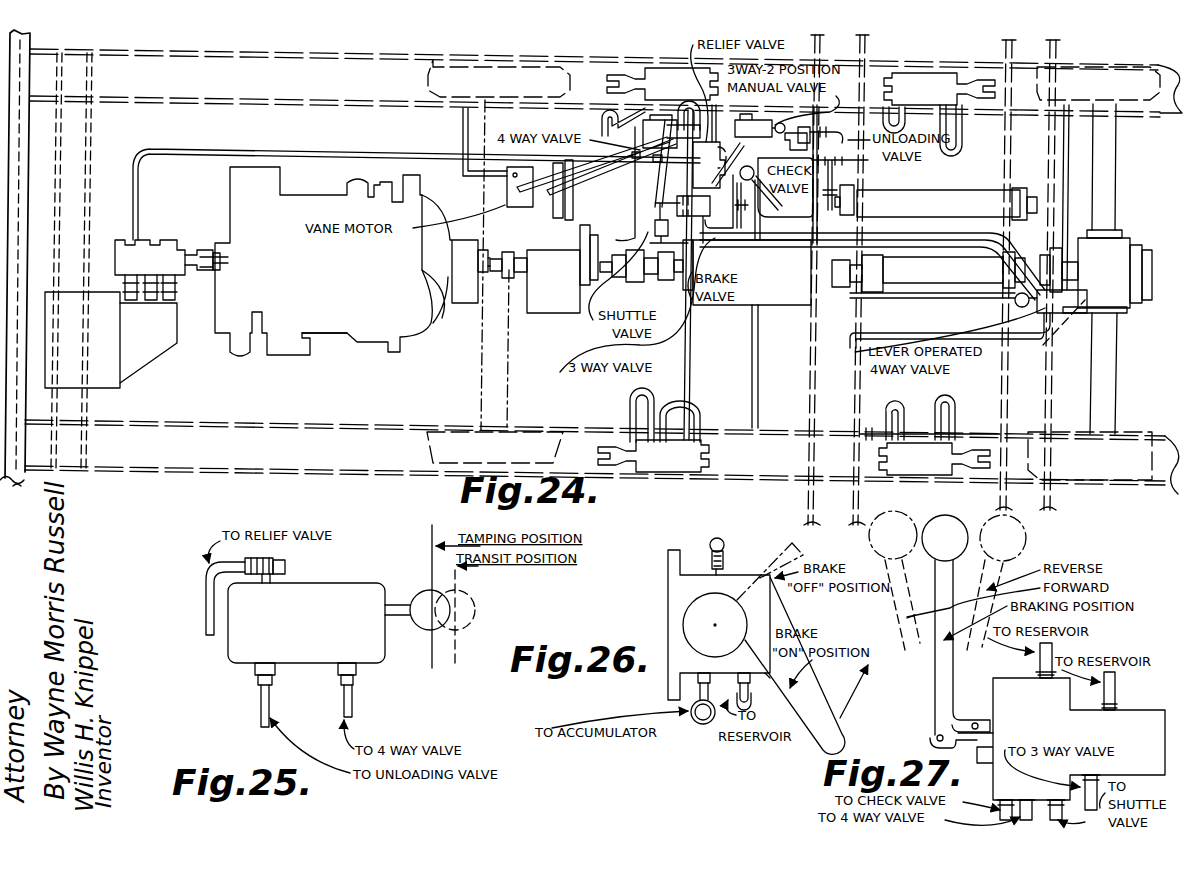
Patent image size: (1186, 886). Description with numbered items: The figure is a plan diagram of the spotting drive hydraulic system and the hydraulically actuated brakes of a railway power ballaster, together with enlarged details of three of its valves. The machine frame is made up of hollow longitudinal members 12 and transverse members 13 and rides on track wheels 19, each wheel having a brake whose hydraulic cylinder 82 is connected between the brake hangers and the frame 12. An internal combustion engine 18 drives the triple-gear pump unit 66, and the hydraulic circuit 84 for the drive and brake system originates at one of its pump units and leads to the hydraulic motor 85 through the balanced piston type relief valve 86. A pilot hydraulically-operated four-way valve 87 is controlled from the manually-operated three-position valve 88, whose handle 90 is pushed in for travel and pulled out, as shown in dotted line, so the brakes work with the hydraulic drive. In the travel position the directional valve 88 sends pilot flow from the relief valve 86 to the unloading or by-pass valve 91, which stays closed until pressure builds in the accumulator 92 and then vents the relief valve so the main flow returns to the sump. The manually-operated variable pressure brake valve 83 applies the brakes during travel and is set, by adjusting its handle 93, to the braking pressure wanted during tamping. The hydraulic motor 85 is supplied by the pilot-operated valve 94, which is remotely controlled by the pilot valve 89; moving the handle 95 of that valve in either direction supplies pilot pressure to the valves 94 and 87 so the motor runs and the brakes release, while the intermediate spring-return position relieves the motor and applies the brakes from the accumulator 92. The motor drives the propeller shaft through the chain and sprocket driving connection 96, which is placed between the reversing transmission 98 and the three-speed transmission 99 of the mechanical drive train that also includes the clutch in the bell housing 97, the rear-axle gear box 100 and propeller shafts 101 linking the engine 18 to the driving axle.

In FIG. 24, the hollow longitudinal members 12 is at (326, 106).
In FIG. 24, the transverse members 13 is at (810, 372).
In FIG. 24, the internal combustion engine 18 is at (330, 346).
In FIG. 24, the track wheels 19 is at (428, 70).
In FIG. 24, the triple-gear pump unit 66 is at (165, 243).
In FIG. 24, the hydraulic cylinder 82 is at (665, 70).
In FIG. 24, the brake valve 83 is at (872, 229).
In FIG. 26, the brake valve 83 is at (680, 592).
In FIG. 24, the hydraulic circuit 84 is at (389, 151).
In FIG. 24, the hydraulic motor 85 is at (507, 183).
In FIG. 24, the balanced piston type relief valve 86 is at (693, 165).
In FIG. 24, the pilot hydraulically-operated four-way valve 87 is at (677, 205).
In FIG. 24, the manually-operated three-position valve 88 is at (752, 137).
In FIG. 25, the manually-operated three-position valve 88 is at (355, 583).
In FIG. 24, the pilot valve 89 is at (1050, 311).
In FIG. 27, the pilot valve 89 is at (993, 683).
In FIG. 25, the handle 90 is at (420, 598).
In FIG. 24, the unloading or by-pass valve 91 is at (845, 143).
In FIG. 24, the accumulator 92 is at (936, 190).
In FIG. 26, the handle 93 is at (845, 737).
In FIG. 24, the pilot-operated valve 94 is at (655, 162).
In FIG. 27, the handle 95 is at (940, 663).
In FIG. 24, the chain and sprocket driving connection 96 is at (560, 312).
In FIG. 24, the bell housing 97 is at (445, 320).
In FIG. 24, the reversing transmission 98 is at (468, 300).
In FIG. 24, the three-speed transmission 99 is at (790, 300).
In FIG. 24, the rear-axle gear box 100 is at (1118, 246).
In FIG. 24, the propeller shafts 101 is at (628, 268).